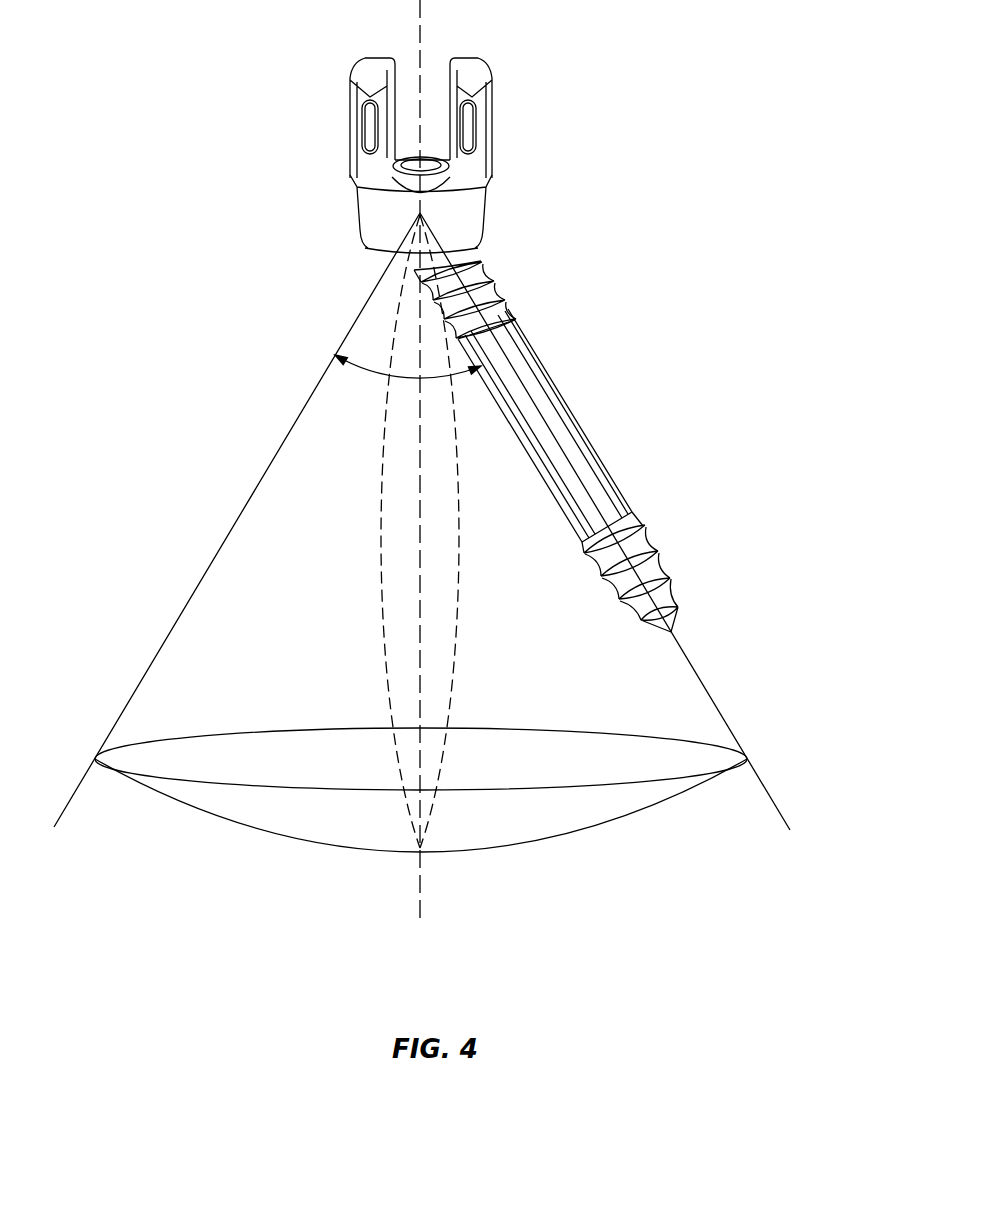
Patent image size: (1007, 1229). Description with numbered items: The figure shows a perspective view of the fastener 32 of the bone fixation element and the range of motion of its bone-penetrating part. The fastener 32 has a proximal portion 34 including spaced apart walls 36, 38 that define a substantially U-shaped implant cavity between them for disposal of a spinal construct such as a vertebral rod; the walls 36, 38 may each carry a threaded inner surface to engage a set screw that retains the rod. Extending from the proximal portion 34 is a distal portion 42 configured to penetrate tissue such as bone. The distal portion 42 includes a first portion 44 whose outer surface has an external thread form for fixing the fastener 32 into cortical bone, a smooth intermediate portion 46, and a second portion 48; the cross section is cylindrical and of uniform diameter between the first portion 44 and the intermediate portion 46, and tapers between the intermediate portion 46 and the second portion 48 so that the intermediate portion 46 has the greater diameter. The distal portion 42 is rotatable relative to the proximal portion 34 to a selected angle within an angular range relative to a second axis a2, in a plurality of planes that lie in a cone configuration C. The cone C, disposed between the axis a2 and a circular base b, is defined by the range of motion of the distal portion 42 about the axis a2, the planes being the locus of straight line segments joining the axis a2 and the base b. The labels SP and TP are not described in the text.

The fastener 32 is at (716, 171).
The proximal portion 34 is at (300, 135).
The wall 36 is at (350, 76).
The wall 38 is at (490, 77).
The distal portion 42 is at (520, 486).
The first portion 44 is at (450, 325).
The smooth intermediate portion 46 is at (562, 428).
The second portion 48 is at (673, 613).
The cone configuration C is at (368, 718).
The spherical path SP is at (390, 748).
The tangent plane TP is at (528, 790).
The circular base b is at (588, 828).
The second axis a2 is at (423, 478).